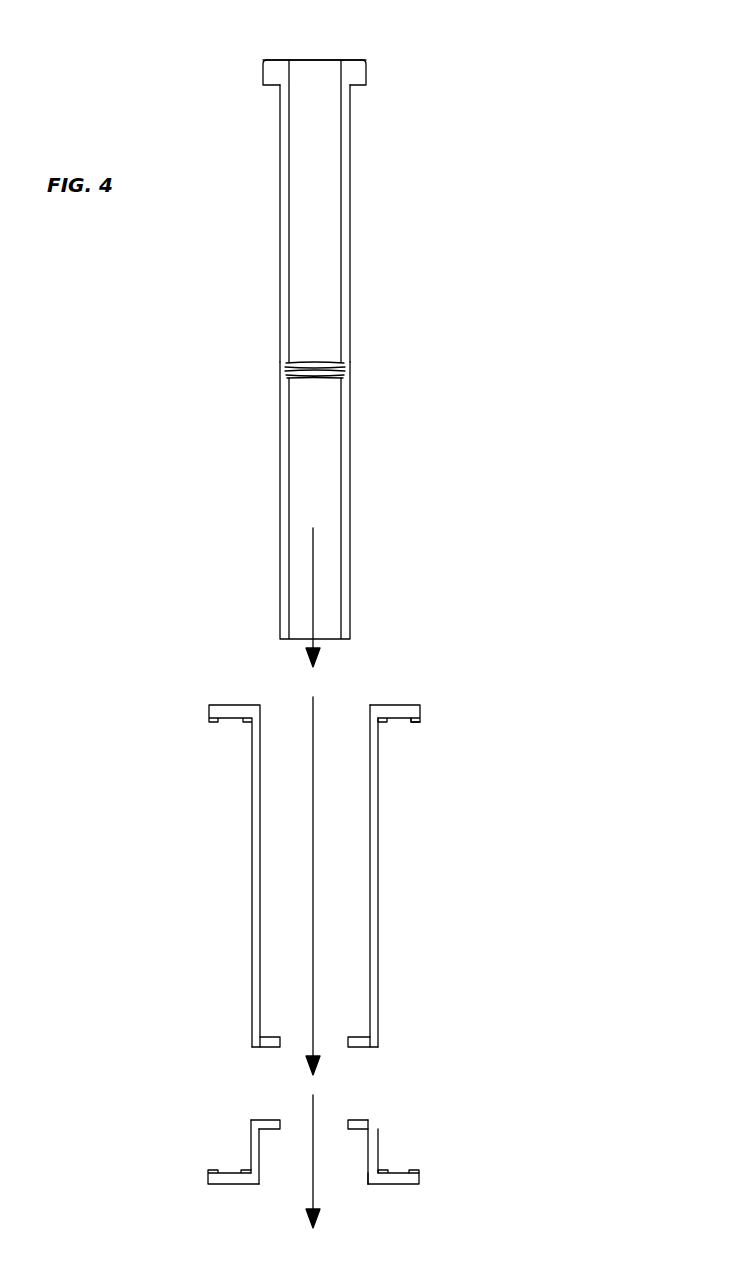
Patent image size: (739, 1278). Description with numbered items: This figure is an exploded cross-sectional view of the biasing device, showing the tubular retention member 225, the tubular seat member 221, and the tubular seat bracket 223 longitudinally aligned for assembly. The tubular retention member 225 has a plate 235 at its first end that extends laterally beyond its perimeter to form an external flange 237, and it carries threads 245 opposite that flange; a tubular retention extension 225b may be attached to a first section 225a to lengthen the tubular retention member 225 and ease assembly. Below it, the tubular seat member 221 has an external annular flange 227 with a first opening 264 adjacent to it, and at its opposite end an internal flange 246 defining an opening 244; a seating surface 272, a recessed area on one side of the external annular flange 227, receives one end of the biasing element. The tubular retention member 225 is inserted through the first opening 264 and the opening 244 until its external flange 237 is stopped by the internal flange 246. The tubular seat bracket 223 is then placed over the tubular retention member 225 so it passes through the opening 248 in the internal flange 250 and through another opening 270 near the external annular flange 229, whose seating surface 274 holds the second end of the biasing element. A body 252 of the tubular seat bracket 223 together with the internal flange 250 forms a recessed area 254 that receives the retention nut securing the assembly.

The tubular seat member 221 is at (346, 870).
The tubular seat bracket 223 is at (376, 1163).
The tubular retention member 225 is at (344, 335).
The first section 225a is at (350, 180).
The tubular retention extension 225b is at (350, 487).
The external annular flange 227 is at (421, 710).
The external annular flange 229 is at (393, 1185).
The plate 235 is at (357, 60).
The external flange 237 is at (360, 63).
The opening 244 is at (281, 1046).
The threads 245 is at (300, 366).
The internal flange 246 is at (351, 1046).
The opening 248 is at (282, 1123).
The internal flange 250 is at (350, 1120).
The body 252 is at (379, 1142).
The recessed area 254 is at (268, 1160).
The first opening 264 is at (369, 712).
The opening 270 is at (367, 1176).
The seating surface 272 is at (394, 721).
The seating surface 274 is at (419, 1151).